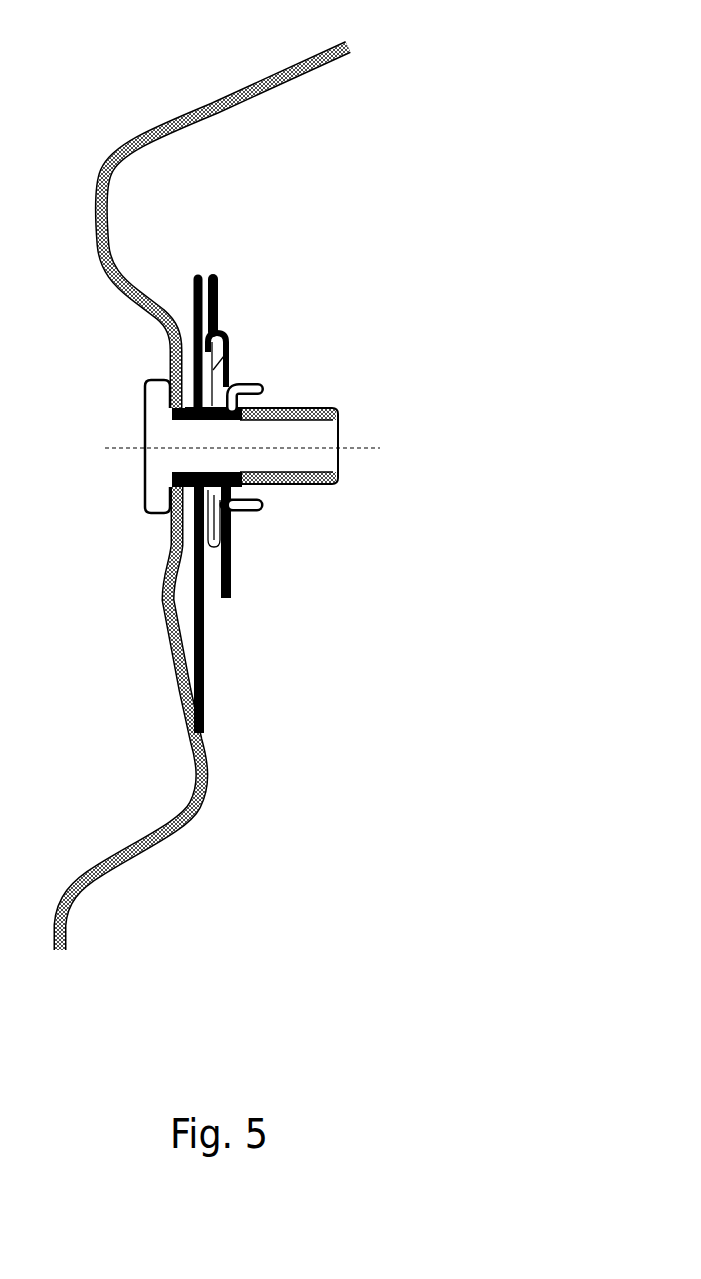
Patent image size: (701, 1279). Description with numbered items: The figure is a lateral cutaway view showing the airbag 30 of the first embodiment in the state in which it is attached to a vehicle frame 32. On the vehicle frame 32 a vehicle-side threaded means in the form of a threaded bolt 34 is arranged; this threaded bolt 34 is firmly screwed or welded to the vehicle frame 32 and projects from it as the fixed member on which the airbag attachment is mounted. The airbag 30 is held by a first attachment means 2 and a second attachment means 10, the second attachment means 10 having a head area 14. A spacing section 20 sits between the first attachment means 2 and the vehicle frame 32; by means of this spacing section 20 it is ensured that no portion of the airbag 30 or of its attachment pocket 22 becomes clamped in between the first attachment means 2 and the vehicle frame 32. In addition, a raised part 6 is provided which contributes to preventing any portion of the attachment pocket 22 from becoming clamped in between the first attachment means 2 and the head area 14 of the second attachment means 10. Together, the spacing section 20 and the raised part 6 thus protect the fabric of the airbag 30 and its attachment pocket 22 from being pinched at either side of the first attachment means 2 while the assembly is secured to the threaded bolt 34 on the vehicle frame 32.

The first attachment means 2 is at (229, 352).
The raised part 6 is at (222, 523).
The second attachment means 10 is at (258, 382).
The head area 14 is at (259, 514).
The spacing section 20 is at (167, 518).
The attachment pocket 22 is at (232, 318).
The airbag 30 is at (220, 250).
The vehicle frame 32 is at (192, 98).
The threaded bolt 34 is at (322, 432).